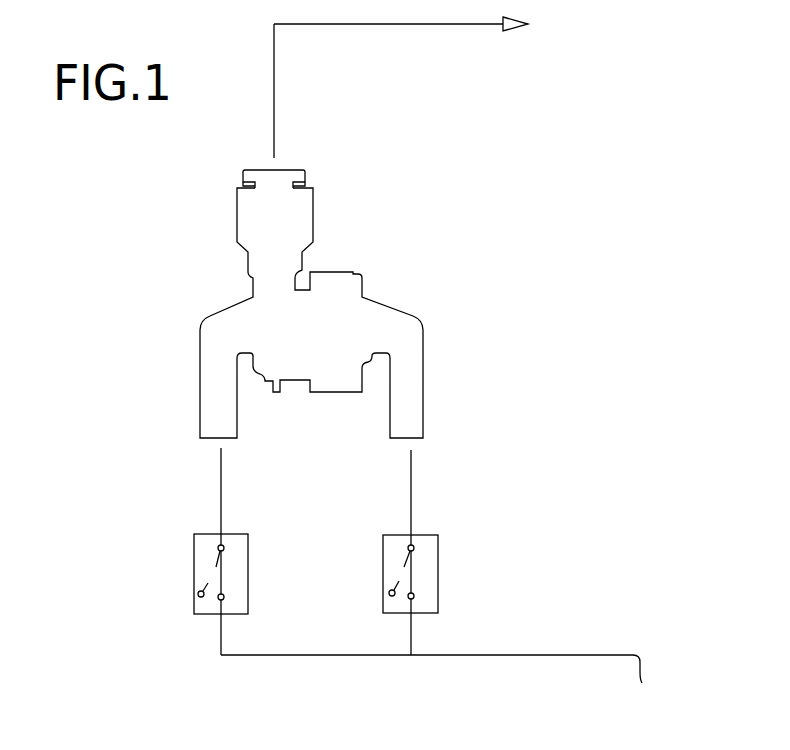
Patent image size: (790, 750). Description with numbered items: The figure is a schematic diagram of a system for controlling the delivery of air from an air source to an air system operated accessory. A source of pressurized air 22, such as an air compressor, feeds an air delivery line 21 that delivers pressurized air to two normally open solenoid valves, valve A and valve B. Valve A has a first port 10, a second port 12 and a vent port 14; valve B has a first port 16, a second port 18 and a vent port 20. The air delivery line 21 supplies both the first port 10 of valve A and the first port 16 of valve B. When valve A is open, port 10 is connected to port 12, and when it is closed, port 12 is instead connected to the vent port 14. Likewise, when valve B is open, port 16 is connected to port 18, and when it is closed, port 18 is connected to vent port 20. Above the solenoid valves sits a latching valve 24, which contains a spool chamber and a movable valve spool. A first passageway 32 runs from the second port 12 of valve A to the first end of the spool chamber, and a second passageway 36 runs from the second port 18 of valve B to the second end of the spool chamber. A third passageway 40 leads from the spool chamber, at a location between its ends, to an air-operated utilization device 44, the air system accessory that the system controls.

The first port 10 is at (221, 628).
The second port 12 is at (233, 534).
The vent port 14 is at (186, 598).
The first port 16 is at (411, 628).
The second port 18 is at (423, 535).
The vent port 20 is at (376, 598).
The air delivery line 21 is at (553, 655).
The source of pressurized air 22 is at (645, 683).
The latching valve 24 is at (318, 335).
The first passageway 32 is at (221, 462).
The second passageway 36 is at (413, 467).
The third passageway 40 is at (274, 118).
The air-operated utilization device 44 is at (472, 47).